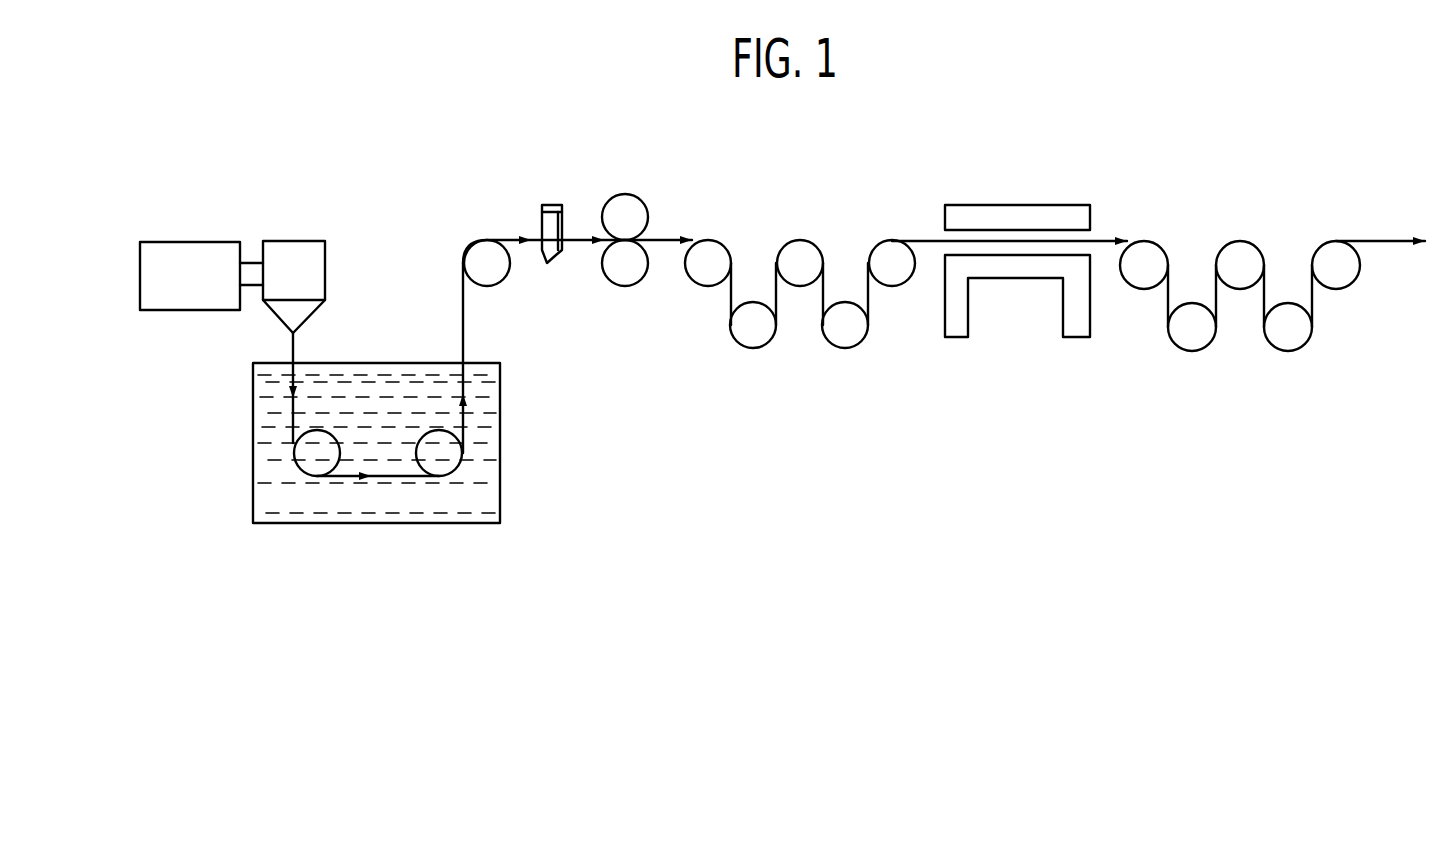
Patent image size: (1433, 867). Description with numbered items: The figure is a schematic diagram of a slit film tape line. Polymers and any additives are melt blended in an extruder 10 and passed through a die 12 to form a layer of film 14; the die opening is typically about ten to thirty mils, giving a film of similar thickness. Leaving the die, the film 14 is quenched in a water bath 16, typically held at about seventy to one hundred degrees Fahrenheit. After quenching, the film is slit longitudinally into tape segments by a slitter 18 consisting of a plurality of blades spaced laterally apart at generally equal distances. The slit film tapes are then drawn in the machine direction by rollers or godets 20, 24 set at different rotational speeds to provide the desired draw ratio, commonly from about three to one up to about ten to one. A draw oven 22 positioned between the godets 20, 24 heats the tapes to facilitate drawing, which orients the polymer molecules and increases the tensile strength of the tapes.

The extruder 10 is at (174, 241).
The die 12 is at (306, 318).
The film 14 is at (463, 296).
The water bath 16 is at (253, 484).
The slitter 18 is at (556, 205).
The godets 20 is at (800, 240).
The draw oven 22 is at (1015, 205).
The godets 24 is at (1240, 241).